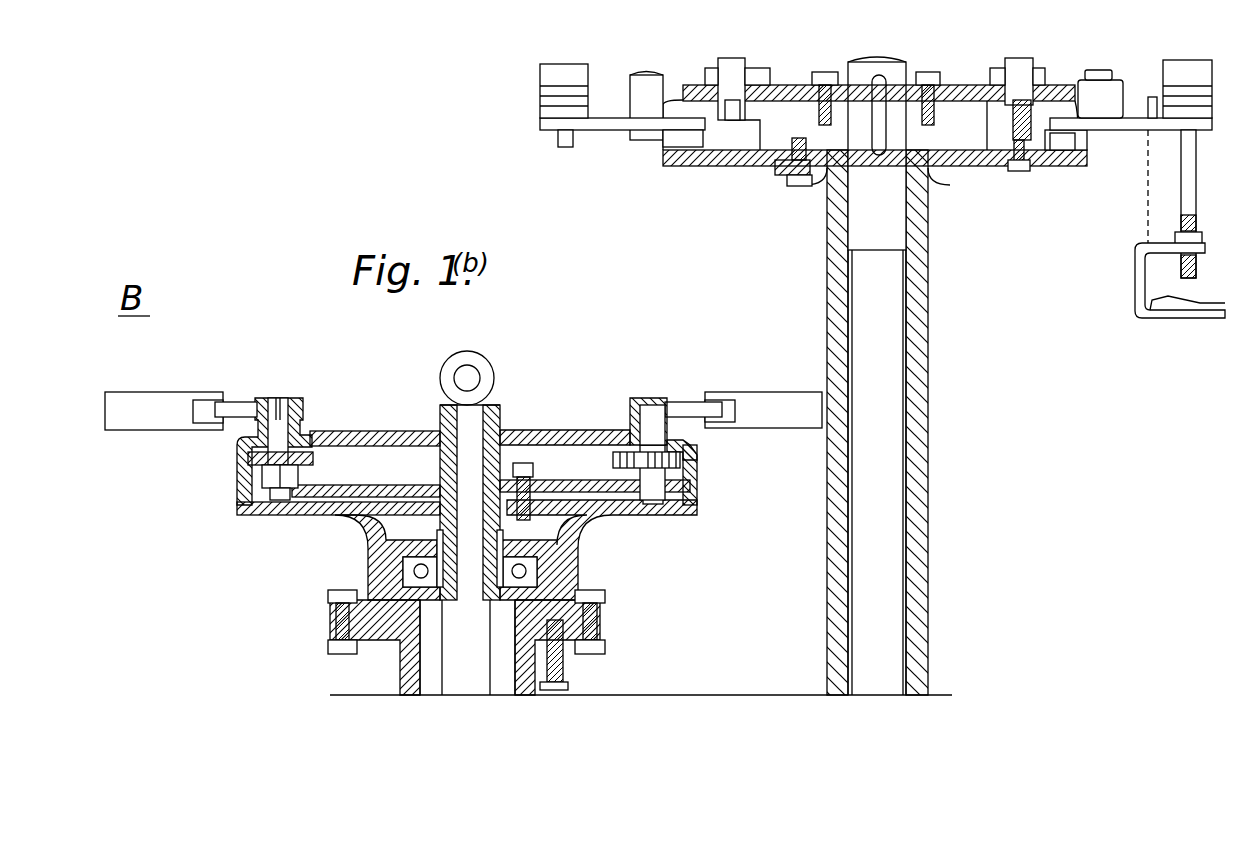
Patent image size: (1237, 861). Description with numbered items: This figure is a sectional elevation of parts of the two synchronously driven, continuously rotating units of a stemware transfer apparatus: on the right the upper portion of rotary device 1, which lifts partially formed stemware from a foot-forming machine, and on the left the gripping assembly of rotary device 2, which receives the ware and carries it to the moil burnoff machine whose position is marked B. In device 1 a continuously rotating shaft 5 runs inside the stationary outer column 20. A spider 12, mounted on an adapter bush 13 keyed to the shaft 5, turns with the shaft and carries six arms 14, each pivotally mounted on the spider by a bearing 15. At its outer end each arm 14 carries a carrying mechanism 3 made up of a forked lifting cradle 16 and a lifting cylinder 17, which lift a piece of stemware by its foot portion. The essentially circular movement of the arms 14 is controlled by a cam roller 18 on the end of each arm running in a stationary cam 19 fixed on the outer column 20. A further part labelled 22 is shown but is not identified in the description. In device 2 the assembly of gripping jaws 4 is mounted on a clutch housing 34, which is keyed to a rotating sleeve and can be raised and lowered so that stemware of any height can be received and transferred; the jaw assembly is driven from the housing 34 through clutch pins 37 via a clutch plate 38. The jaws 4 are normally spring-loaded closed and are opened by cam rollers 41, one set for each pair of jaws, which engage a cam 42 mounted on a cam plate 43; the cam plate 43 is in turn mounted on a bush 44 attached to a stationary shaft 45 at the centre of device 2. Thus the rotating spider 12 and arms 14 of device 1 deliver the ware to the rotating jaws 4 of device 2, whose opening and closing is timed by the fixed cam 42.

The rotary device 1 is at (950, 403).
The rotary device 2 is at (130, 565).
The carrying mechanism 3 is at (524, 120).
The gripping jaws 4 is at (170, 382).
The continuously rotating shaft 5 is at (888, 543).
The spider 12 is at (990, 103).
The adapter bush 13 is at (840, 131).
The arm 14 is at (607, 131).
The bearing 15 is at (667, 93).
The forked lifting cradle 16 is at (1135, 311).
The lifting cylinder 17 is at (1181, 62).
The cam roller 18 is at (1062, 152).
The stationary cam 19 is at (1026, 146).
The outer column 20 is at (928, 322).
The threaded stud 22 is at (1023, 118).
The clutch housing 34 is at (398, 680).
The clutch pins 37 is at (562, 690).
The clutch plate 38 is at (330, 612).
The cam rollers 41 is at (662, 486).
The cam 42 is at (613, 480).
The cam plate 43 is at (632, 493).
The bush 44 is at (524, 480).
The stationary shaft 45 is at (480, 660).